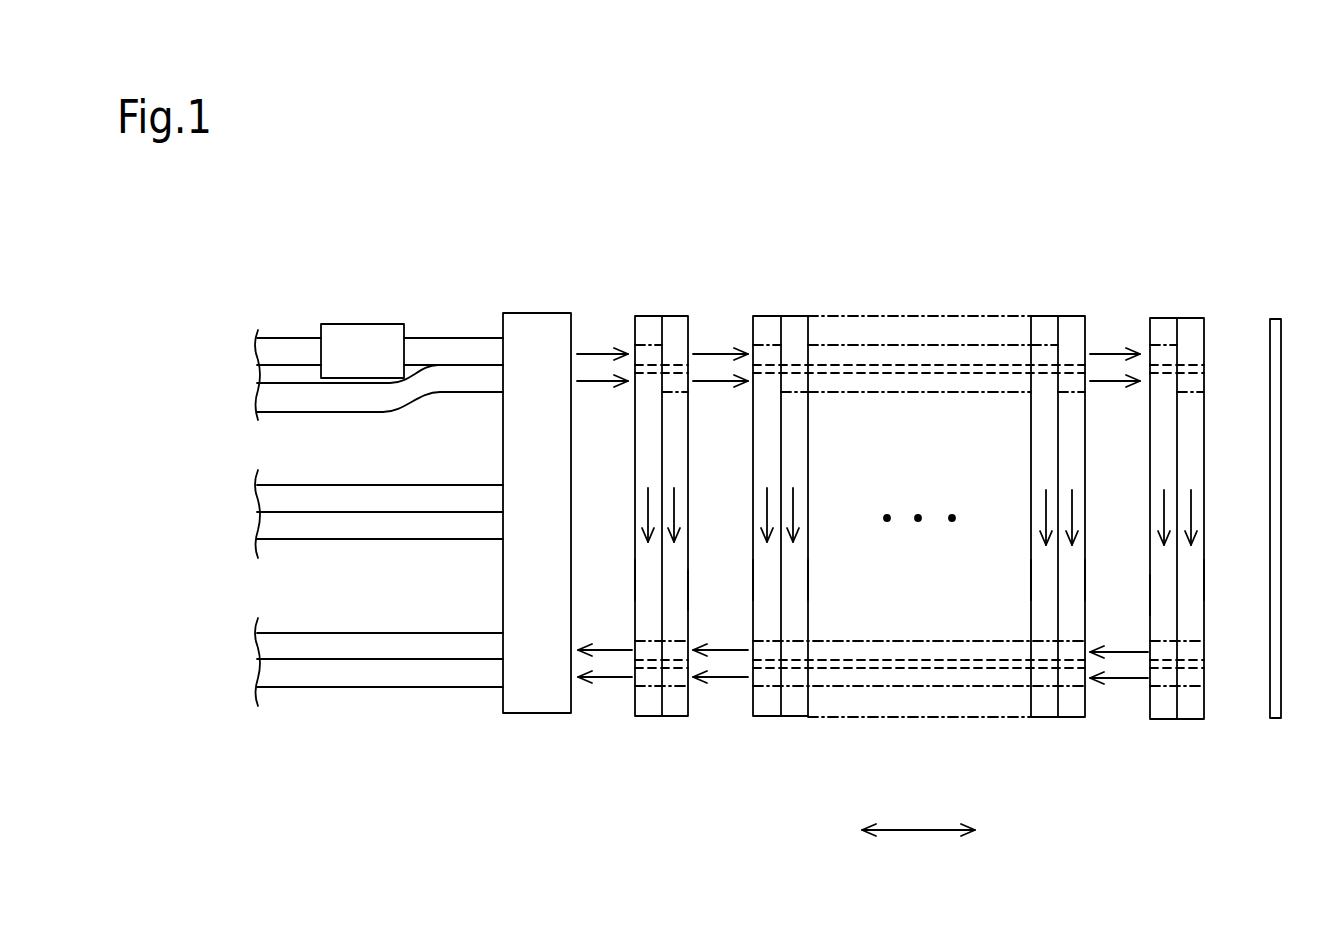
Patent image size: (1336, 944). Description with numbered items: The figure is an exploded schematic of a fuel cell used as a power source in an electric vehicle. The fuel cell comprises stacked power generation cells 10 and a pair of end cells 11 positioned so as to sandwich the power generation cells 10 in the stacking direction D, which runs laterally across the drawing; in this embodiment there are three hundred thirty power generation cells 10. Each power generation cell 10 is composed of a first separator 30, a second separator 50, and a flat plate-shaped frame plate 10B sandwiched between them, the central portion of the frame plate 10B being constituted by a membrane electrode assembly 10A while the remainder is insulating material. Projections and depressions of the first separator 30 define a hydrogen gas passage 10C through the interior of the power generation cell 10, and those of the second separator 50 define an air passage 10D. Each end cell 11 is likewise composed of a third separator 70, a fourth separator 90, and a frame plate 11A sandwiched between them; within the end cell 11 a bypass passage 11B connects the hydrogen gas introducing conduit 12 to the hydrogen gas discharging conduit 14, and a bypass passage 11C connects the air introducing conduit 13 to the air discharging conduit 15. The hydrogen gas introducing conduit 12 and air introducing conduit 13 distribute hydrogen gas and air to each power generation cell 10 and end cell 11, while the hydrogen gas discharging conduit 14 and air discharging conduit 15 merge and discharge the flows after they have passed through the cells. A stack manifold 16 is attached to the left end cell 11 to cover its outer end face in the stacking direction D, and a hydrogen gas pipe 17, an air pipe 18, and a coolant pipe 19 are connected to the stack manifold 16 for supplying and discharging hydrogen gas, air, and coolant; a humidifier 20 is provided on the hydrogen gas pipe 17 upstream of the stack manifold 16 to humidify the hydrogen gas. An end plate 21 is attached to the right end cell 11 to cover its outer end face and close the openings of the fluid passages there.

The power generation cell 10 is at (790, 717).
The membrane electrode assembly 10A is at (782, 338).
The frame plate 10B is at (1056, 338).
The hydrogen gas passage 10C is at (766, 578).
The air passage 10D is at (796, 580).
The end cell 11 is at (670, 717).
The frame plate 11A is at (661, 332).
The bypass passage 11B is at (648, 578).
The bypass passage 11C is at (676, 593).
The hydrogen gas introducing conduit 12 is at (921, 346).
The air introducing conduit 13 is at (950, 394).
The hydrogen gas discharging conduit 14 is at (917, 641).
The air discharging conduit 15 is at (921, 688).
The stack manifold 16 is at (535, 715).
The hydrogen gas pipe 17 is at (452, 366).
The air pipe 18 is at (427, 511).
The coolant pipe 19 is at (425, 659).
The humidifier 20 is at (347, 323).
The end plate 21 is at (1272, 721).
The first separator 30 is at (768, 313).
The second separator 50 is at (795, 313).
The third separator 70 is at (650, 313).
The fourth separator 90 is at (676, 313).
The stacking direction D is at (917, 833).